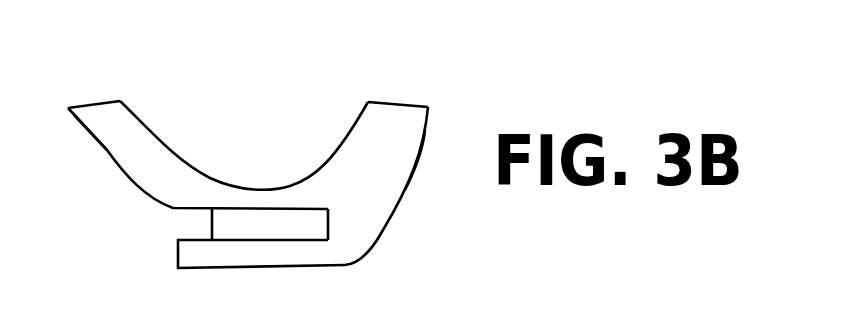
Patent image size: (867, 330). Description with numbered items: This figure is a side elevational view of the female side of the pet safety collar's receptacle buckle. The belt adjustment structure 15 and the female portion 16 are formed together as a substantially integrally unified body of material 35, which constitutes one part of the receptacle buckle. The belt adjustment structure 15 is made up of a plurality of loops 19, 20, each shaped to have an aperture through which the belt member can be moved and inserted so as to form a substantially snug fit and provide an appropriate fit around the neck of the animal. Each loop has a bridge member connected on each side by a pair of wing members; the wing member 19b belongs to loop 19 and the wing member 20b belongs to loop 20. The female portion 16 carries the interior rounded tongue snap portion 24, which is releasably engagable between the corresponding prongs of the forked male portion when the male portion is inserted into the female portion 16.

The belt adjustment structure 15 is at (350, 138).
The female portion 16 is at (285, 250).
The loop 19 is at (107, 105).
The wing member 19b is at (137, 163).
The loop 20 is at (385, 101).
The wing member 20b is at (400, 132).
The interior rounded tongue snap portion 24 is at (224, 219).
The integrally unified body of material 35 is at (286, 177).